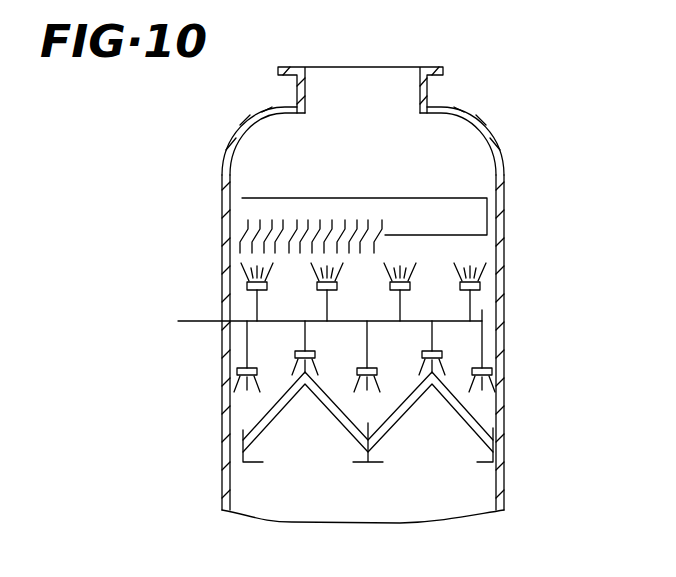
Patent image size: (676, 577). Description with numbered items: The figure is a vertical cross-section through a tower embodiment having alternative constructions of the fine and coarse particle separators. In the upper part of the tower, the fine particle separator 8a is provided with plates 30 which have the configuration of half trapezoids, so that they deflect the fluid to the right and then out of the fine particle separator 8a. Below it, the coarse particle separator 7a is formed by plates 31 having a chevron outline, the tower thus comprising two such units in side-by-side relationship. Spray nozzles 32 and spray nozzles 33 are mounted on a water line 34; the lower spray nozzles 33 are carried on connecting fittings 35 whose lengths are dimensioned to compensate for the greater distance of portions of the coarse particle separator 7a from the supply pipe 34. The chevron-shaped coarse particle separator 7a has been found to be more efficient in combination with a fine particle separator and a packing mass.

The fine particle separator 8a is at (488, 222).
The plates 30 is at (245, 227).
The spray nozzles 32 is at (480, 285).
The water line 34 is at (230, 330).
The connecting fitting 35 is at (247, 350).
The spray nozzles 33 is at (443, 355).
The coarse particle separator 7a is at (490, 380).
The plates 31 is at (243, 455).